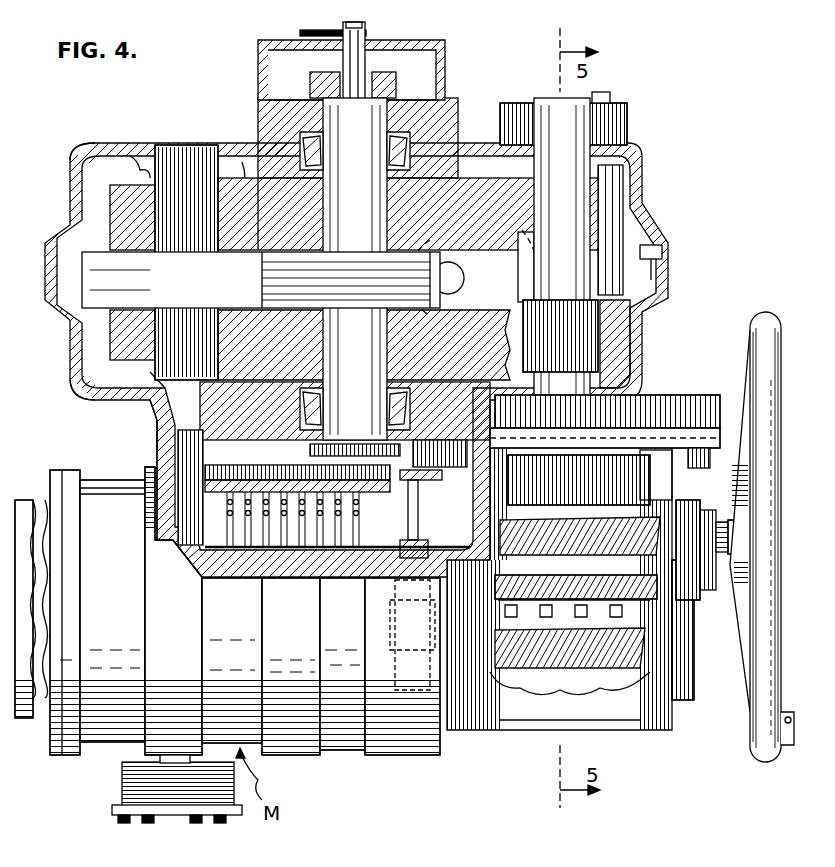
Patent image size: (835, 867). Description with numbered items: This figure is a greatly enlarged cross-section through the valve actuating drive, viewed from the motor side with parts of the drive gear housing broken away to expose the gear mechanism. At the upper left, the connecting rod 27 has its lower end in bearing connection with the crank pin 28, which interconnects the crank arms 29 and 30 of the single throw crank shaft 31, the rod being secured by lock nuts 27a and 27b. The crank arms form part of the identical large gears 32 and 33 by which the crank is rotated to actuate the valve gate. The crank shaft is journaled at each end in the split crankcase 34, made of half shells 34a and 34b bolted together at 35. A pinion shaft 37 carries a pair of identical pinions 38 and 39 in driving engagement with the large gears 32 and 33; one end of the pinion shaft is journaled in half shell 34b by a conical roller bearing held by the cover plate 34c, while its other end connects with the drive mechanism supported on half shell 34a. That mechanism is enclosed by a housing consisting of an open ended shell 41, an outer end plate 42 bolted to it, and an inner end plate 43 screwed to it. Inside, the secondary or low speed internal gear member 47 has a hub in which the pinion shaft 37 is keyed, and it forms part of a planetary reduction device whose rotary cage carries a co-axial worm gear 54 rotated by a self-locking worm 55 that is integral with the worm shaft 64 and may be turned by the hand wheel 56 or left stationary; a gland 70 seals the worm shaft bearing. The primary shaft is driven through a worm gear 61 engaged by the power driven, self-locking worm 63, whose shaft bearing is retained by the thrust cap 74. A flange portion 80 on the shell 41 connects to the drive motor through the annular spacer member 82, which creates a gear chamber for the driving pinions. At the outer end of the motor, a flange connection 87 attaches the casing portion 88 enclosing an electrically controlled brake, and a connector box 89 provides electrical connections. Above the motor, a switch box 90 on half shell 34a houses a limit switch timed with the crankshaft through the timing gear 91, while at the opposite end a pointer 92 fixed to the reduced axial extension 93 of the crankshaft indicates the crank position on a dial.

The connecting rod 27 is at (261, 280).
The lock nut 27a is at (140, 154).
The lock nut 27b is at (150, 374).
The crank pin 28 is at (164, 262).
The crank arm 29 is at (153, 412).
The crank arm 30 is at (258, 205).
The crank shaft 31 is at (355, 269).
The large gear 32 is at (455, 314).
The large gear 33 is at (447, 240).
The crankcase 34 is at (662, 286).
The half shell 34a is at (72, 380).
The half shell 34b is at (84, 152).
The cover member 34c is at (618, 102).
The bolts 35 is at (666, 252).
The pinion shaft 37 is at (578, 413).
The pinion 38 is at (525, 318).
The pinion 39 is at (527, 240).
The housing shell 41 is at (680, 700).
The outer end plate 42 is at (536, 728).
The inner end plate 43 is at (708, 446).
The internal gear member 47 is at (579, 480).
The worm gear 54 is at (566, 530).
The worm 55 is at (600, 570).
The hand wheel 56 is at (750, 332).
The worm gear 61 is at (570, 670).
The power driven worm 63 is at (600, 692).
The worm shaft 64 is at (726, 524).
The gland 70 is at (704, 576).
The thrust cap 74 is at (692, 652).
The flange portion 80 is at (720, 410).
The spacer member 82 is at (400, 756).
The flange connection 87 is at (74, 760).
The casing portion 88 is at (24, 722).
The connector box 89 is at (172, 812).
The switch box 90 is at (165, 500).
The timing gear 91 is at (326, 450).
The pointer 92 is at (332, 30).
The axial extension 93 is at (362, 62).